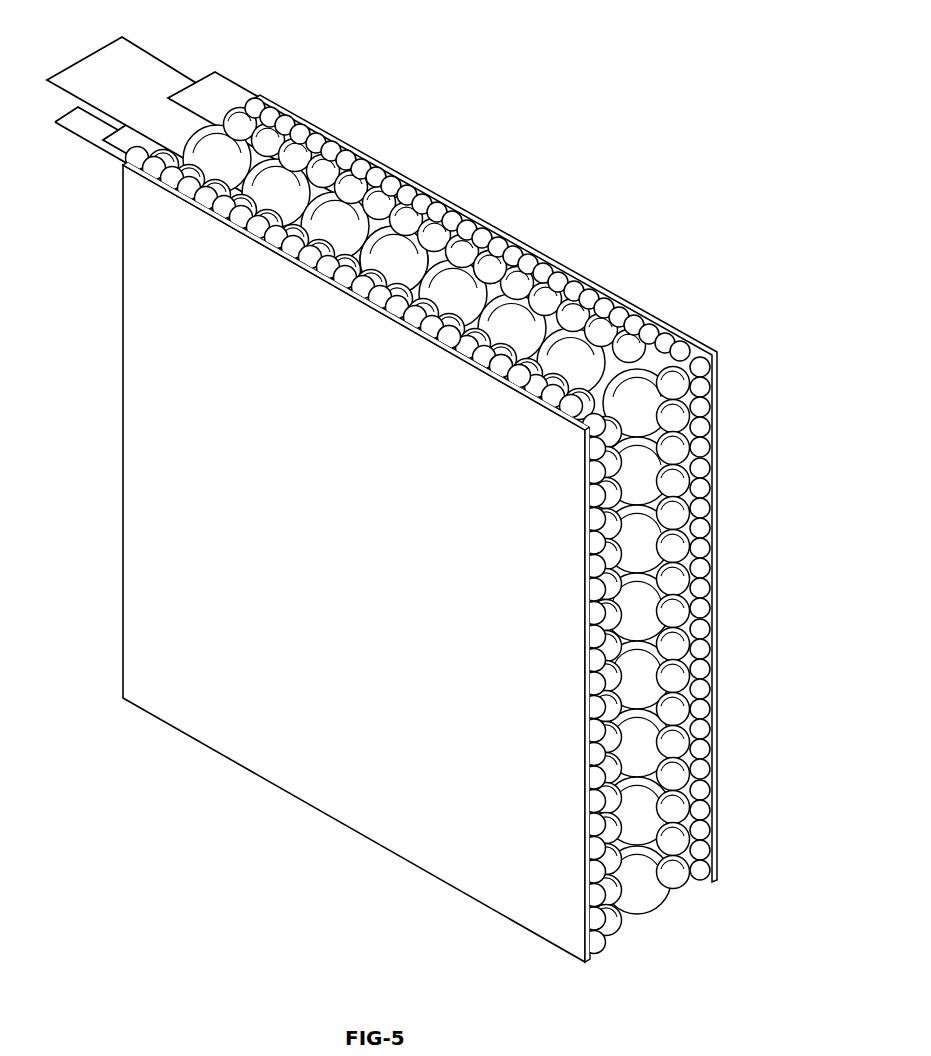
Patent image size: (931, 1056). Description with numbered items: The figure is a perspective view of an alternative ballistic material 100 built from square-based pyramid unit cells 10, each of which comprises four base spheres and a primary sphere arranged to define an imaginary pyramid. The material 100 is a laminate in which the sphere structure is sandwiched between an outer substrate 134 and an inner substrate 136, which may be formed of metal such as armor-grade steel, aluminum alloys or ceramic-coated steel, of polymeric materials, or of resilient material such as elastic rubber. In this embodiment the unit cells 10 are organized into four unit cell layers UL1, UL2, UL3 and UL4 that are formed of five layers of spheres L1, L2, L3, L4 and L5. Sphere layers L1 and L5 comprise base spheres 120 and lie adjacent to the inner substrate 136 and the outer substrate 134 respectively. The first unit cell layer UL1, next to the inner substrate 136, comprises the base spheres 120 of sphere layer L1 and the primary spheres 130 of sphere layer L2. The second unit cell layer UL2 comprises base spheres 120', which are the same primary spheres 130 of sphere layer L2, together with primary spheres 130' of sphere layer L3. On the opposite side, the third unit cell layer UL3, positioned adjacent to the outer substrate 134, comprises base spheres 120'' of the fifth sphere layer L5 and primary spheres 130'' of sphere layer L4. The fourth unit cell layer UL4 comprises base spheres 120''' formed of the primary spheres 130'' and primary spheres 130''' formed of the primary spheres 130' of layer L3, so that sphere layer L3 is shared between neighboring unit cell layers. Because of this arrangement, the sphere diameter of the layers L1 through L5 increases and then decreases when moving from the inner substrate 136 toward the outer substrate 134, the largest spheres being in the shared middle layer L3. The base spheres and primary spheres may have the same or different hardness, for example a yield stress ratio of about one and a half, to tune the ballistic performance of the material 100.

The ballistic material 100 is at (412, 506).
The square-based pyramid unit cell (SBPUC) 10 is at (469, 553).
The base spheres 120 is at (528, 493).
The base spheres 120' is at (490, 267).
The base spheres 120'' is at (497, 414).
The base spheres 120''' is at (433, 354).
The primary spheres 130 is at (503, 517).
The primary spheres 130' is at (467, 537).
The primary spheres 130'' is at (436, 564).
The primary spheres 130''' is at (371, 276).
The outer substrate 134 is at (150, 643).
The inner substrate 136 is at (718, 402).
The sphere layer L1 is at (702, 862).
The sphere layer L2 is at (675, 880).
The sphere layer L3 is at (638, 890).
The sphere layer L4 is at (603, 920).
The sphere layer L5 is at (593, 950).
The first unit cell layer UL1 is at (190, 88).
The second unit cell layer UL2 is at (82, 60).
The third unit cell layer UL3 is at (55, 108).
The fourth unit cell layer UL4 is at (128, 118).